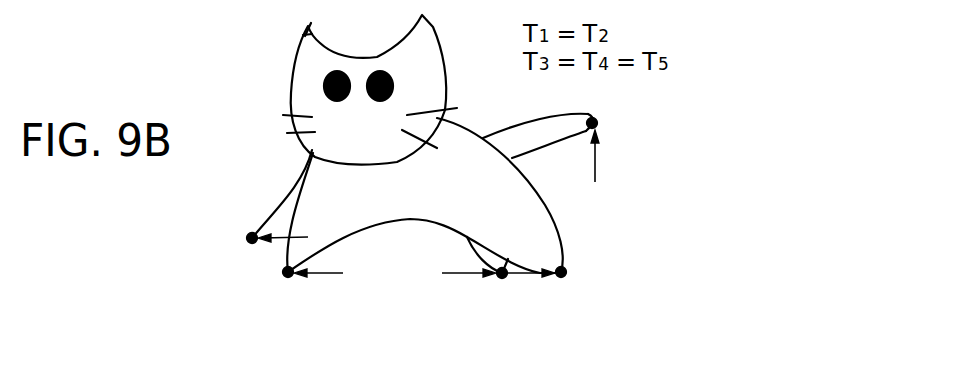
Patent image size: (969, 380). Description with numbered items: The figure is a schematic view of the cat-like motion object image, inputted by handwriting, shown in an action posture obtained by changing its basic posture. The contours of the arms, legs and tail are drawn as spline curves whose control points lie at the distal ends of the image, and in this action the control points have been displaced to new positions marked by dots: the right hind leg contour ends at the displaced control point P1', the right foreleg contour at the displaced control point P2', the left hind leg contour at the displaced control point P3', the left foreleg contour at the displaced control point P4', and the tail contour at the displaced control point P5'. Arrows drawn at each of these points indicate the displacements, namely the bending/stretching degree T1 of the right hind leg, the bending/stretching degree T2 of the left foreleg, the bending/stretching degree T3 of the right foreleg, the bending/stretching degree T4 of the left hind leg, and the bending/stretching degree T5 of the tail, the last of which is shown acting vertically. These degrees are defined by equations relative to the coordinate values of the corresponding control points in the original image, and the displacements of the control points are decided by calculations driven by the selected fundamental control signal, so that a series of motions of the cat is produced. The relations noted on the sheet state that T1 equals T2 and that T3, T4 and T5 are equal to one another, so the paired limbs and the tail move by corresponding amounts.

The displaced control point of right hind leg contour P1' is at (244, 263).
The displaced control point of right foreleg contour P2' is at (281, 297).
The displaced control point of left hind leg contour P3' is at (503, 306).
The displaced control point of left foreleg contour P4' is at (576, 309).
The displaced control point of tail contour P5' is at (624, 127).
The bending/stretching degree of right hind leg T1 is at (295, 236).
The bending/stretching degree of left foreleg T2 is at (318, 286).
The bending/stretching degree of right foreleg T3 is at (469, 288).
The bending/stretching degree of left hind leg T4 is at (531, 288).
The bending/stretching degree of tail T5 is at (595, 172).